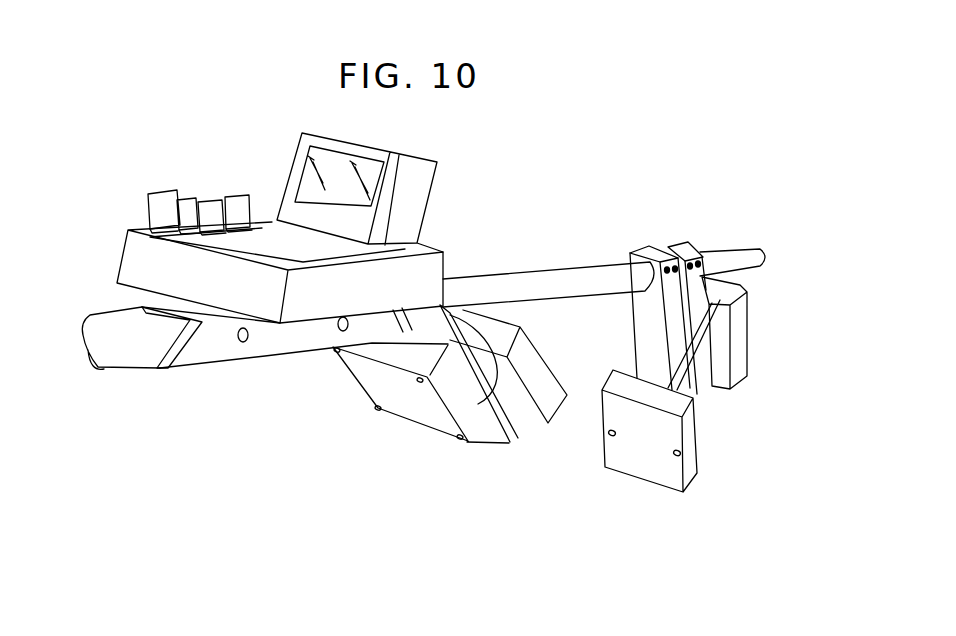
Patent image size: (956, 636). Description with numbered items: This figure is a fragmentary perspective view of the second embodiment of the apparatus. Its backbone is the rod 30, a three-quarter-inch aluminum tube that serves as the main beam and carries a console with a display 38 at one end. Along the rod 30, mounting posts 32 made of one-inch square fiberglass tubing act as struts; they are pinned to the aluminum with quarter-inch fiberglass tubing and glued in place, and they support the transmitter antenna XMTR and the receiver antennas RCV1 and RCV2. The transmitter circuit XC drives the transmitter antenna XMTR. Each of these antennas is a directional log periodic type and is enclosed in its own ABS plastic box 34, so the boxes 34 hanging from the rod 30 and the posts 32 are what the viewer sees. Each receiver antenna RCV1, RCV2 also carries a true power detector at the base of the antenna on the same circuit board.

The rod 30 is at (528, 283).
The mounting posts 32 is at (672, 245).
The ABS plastic box 34 is at (427, 415).
The display screen 38 is at (279, 176).
The transmitter circuit XC is at (368, 393).
The transmitter antenna XMTR is at (537, 360).
The receiver antenna RCV1 is at (750, 343).
The receiver antenna RCV2 is at (646, 464).